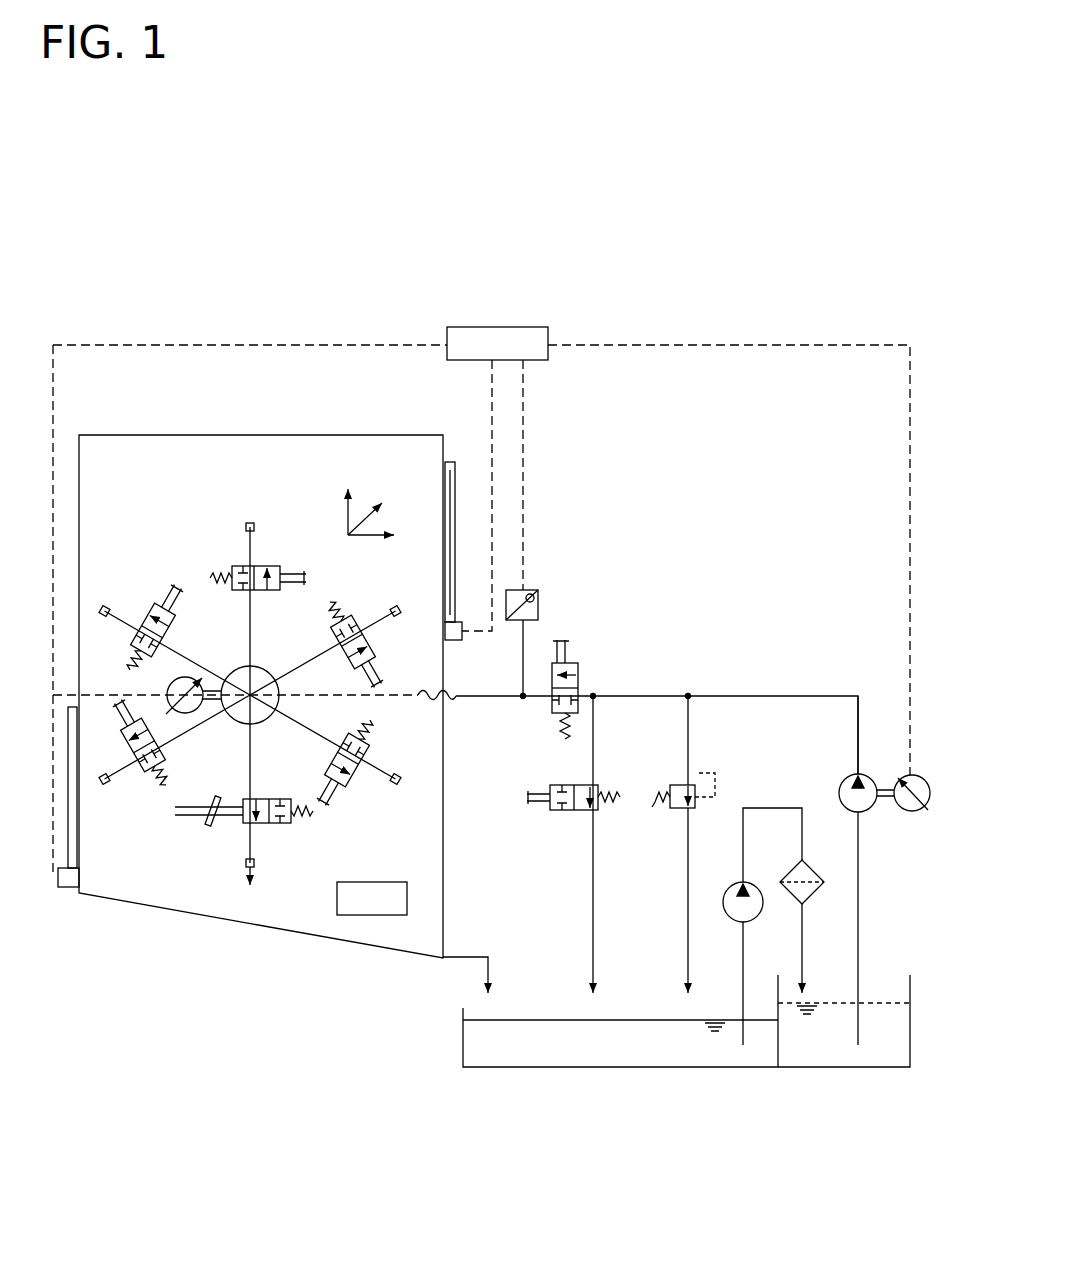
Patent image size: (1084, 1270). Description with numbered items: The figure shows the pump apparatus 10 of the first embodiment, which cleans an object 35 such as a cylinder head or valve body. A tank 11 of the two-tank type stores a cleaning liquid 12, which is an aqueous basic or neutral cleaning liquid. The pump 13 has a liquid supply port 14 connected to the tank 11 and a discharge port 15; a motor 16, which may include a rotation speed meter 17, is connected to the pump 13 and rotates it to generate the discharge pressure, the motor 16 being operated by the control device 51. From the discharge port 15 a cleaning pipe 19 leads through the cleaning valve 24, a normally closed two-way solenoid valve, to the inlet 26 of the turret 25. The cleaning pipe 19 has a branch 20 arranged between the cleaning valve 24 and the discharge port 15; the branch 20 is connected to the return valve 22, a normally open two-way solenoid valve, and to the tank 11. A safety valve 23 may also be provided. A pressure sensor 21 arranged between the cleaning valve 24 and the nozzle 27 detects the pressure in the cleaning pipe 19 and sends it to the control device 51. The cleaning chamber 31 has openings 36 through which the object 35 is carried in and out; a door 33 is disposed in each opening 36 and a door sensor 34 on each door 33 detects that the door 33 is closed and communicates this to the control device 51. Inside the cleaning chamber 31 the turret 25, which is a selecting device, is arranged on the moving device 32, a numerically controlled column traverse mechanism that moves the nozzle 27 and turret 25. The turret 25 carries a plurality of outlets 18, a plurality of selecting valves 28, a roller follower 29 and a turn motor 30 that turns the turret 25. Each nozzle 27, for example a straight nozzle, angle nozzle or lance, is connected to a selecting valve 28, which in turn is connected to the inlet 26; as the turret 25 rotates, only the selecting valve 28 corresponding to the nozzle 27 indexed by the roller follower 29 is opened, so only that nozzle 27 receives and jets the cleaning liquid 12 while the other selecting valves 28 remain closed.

The pump apparatus 10 is at (912, 294).
The tank 11 is at (815, 1068).
The cleaning liquid 12 is at (844, 1021).
The pump 13 is at (876, 824).
The liquid supply port 14 is at (858, 812).
The discharge port 15 is at (850, 778).
The motor 16 is at (924, 807).
The rotation speed meter 17 is at (915, 837).
The outlets 18 is at (249, 562).
The cleaning pipe 19 is at (713, 696).
The branch 20 is at (593, 826).
The pressure sensor 21 is at (540, 600).
The return valve 22 is at (602, 790).
The safety valve 23 is at (678, 816).
The cleaning valve 24 is at (580, 663).
The turret 25 is at (176, 530).
The inlet 26 is at (431, 690).
The nozzle 27 is at (246, 526).
The selecting valves 28 is at (276, 566).
The roller follower 29 is at (208, 828).
The turn motor 30 is at (168, 692).
The cleaning chamber 31 is at (410, 435).
The moving device 32 is at (340, 512).
The door 33 is at (456, 465).
The door sensor 34 is at (452, 642).
The object 35 is at (380, 882).
The openings 36 is at (447, 523).
The control device 51 is at (500, 327).